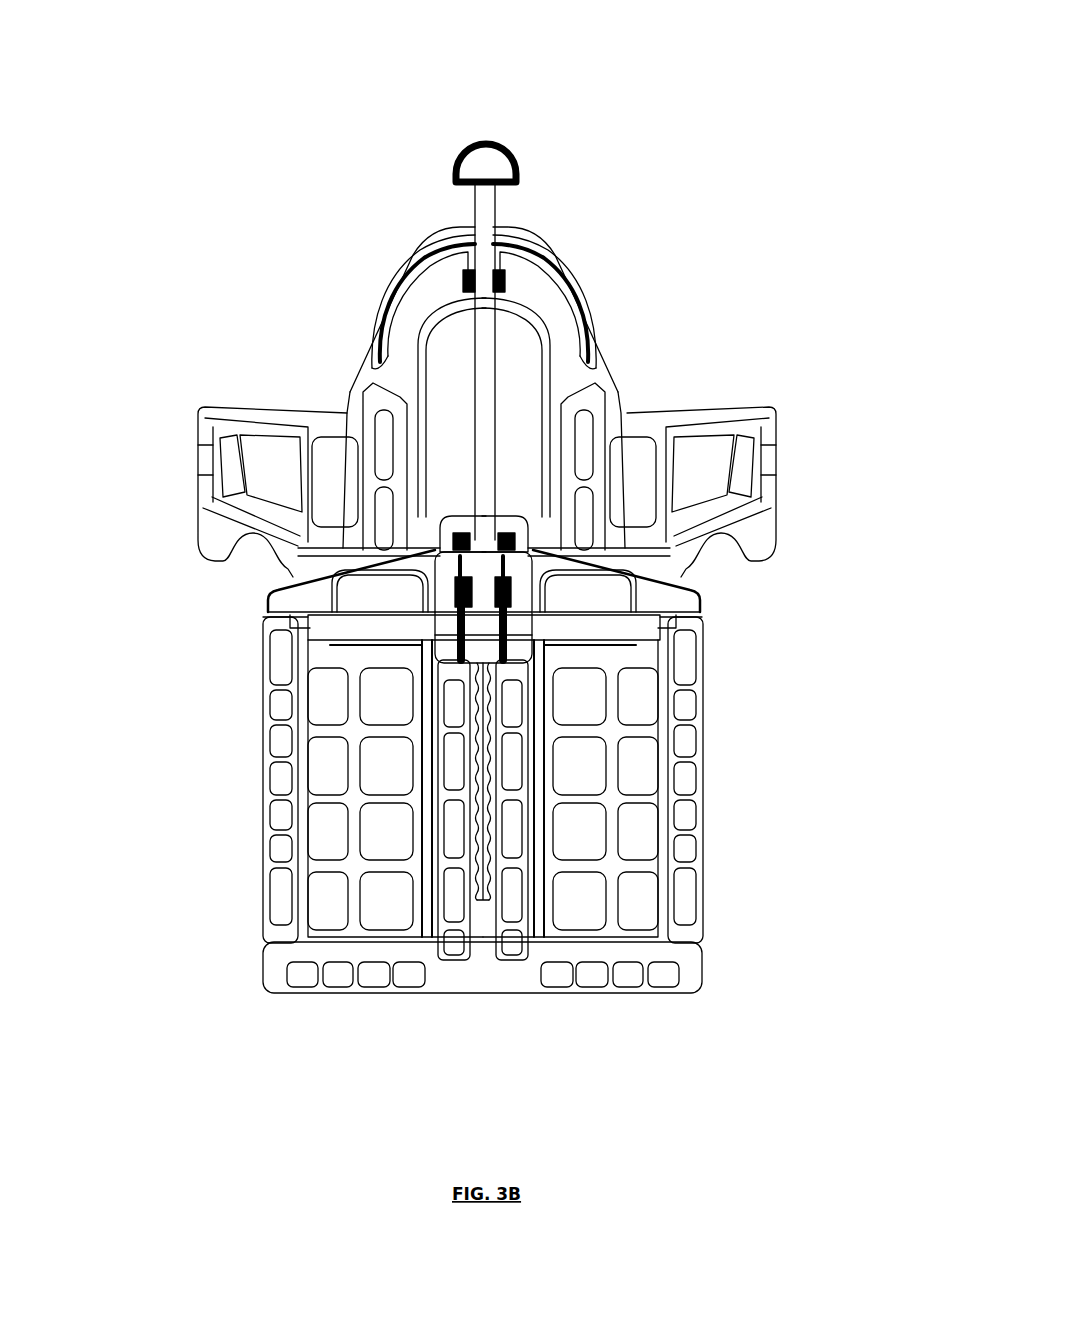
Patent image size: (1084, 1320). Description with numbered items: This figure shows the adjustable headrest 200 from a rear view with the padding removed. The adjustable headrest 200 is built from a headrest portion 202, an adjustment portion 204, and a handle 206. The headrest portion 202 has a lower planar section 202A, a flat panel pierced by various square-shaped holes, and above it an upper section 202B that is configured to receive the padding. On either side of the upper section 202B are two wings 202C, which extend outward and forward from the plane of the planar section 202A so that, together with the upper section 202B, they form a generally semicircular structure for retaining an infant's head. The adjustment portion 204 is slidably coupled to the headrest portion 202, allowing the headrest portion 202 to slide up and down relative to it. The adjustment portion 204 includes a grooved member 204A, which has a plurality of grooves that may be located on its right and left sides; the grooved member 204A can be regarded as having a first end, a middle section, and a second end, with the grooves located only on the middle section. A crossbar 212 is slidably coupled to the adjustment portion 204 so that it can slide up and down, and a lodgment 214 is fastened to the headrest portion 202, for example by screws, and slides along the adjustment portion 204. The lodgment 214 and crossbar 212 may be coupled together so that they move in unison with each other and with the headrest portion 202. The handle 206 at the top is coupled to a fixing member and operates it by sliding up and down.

The adjustable headrest 200 is at (501, 604).
The headrest portion 202 is at (553, 340).
The planar section 202A is at (650, 803).
The upper section 202B is at (468, 236).
The wings 202C is at (215, 535).
The adjustment portion 204 is at (512, 965).
The grooved member 204A is at (487, 900).
The handle 206 is at (490, 130).
The crossbar 212 is at (670, 632).
The lodgment 214 is at (465, 568).